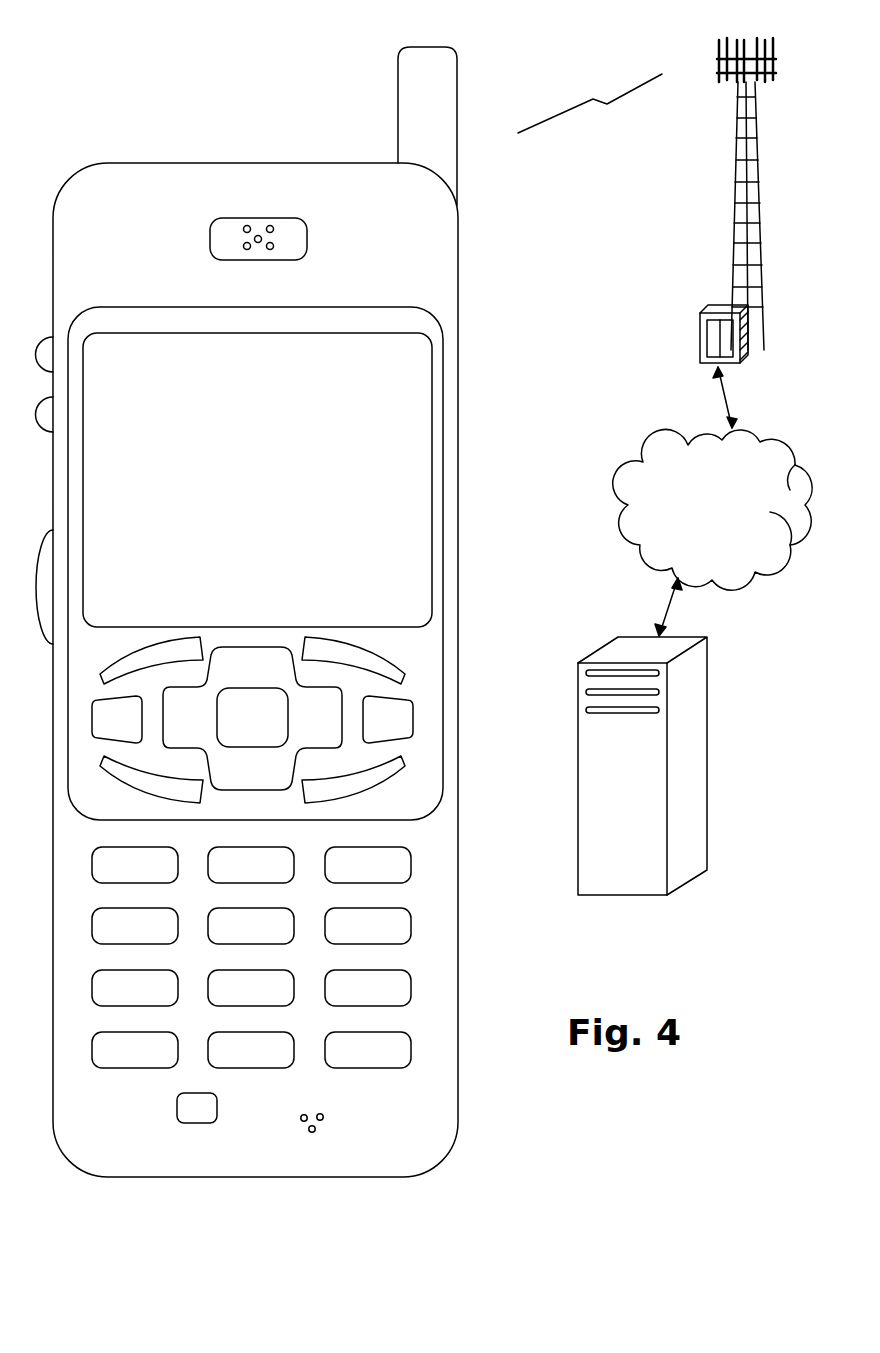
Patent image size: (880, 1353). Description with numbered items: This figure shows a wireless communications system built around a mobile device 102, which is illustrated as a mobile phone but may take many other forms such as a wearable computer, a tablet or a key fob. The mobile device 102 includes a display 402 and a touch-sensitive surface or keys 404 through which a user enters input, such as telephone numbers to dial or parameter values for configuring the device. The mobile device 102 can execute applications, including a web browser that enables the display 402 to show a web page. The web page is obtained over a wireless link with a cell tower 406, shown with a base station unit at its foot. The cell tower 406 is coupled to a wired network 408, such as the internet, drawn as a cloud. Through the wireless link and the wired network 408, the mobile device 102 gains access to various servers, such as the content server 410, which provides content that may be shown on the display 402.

The mobile device 102 is at (97, 1174).
The display 402 is at (433, 350).
The keys 404 is at (459, 637).
The cell tower 406 is at (730, 216).
The wired network 408 is at (640, 552).
The content server 410 is at (620, 898).